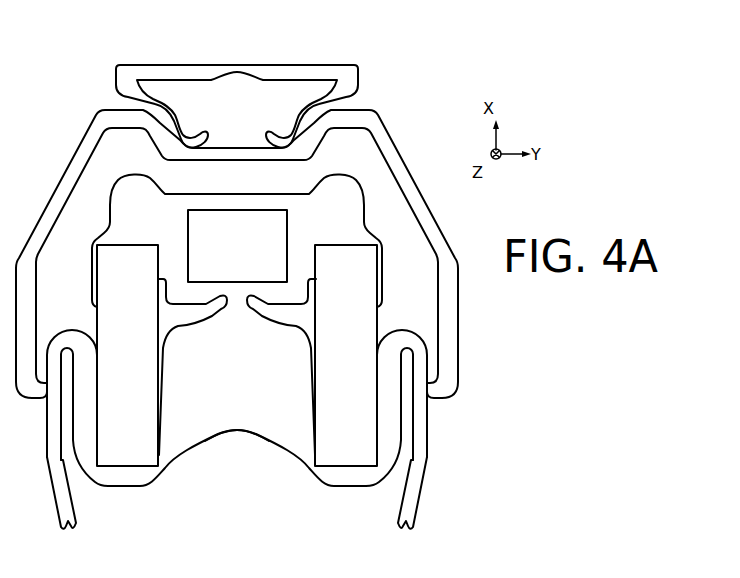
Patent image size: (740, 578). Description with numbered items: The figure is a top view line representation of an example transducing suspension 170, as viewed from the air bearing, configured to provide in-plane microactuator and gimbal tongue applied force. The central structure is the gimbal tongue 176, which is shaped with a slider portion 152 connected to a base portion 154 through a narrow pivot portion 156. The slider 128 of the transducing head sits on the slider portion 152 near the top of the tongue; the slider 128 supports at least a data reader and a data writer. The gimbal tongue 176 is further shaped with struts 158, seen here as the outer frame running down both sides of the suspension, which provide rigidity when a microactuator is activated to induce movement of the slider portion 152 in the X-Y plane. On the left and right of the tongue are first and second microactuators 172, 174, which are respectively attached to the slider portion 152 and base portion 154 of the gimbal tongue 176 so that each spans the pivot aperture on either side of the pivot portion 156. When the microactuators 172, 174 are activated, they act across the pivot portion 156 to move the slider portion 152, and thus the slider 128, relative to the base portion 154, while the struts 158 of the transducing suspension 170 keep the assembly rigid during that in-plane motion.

The transducing suspension 170 is at (447, 40).
The struts 158 is at (67, 177).
The slider portion 152 is at (170, 203).
The slider 128 is at (256, 258).
The pivot portion 156 is at (244, 319).
The base portion 154 is at (251, 398).
The first microactuator 172 is at (147, 461).
The second microactuator 174 is at (366, 462).
The gimbal tongue 176 is at (243, 449).